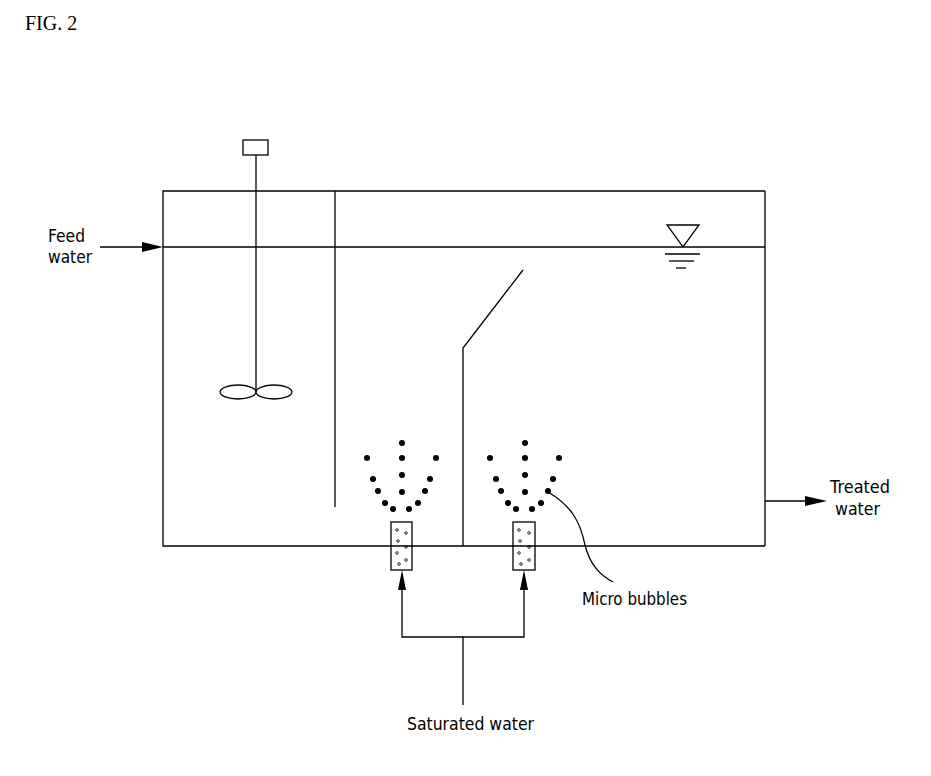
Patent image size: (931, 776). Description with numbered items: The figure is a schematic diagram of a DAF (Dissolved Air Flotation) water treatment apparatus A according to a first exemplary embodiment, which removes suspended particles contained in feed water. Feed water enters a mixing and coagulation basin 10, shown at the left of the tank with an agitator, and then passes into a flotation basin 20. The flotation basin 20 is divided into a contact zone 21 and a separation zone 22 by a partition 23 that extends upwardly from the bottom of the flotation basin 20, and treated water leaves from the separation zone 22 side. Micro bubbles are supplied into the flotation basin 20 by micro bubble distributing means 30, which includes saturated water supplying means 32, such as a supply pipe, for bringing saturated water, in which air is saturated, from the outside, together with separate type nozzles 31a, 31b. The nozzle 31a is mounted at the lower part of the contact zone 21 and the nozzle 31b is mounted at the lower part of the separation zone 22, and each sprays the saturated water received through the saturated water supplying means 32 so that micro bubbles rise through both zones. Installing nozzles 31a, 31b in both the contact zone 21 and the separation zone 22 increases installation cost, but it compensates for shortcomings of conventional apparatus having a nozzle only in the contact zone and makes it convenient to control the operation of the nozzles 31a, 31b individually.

The DAF water treatment apparatus A is at (733, 125).
The mixing and coagulation basin 10 is at (278, 298).
The flotation basin 20 is at (557, 113).
The contact zone 21 is at (400, 321).
The separation zone 22 is at (574, 321).
The partition 23 is at (463, 379).
The micro bubble distributing means 30 is at (292, 592).
The separate type nozzle 31a is at (391, 565).
The separate type nozzle 31b is at (513, 565).
The saturated water supplying means 32 is at (402, 632).